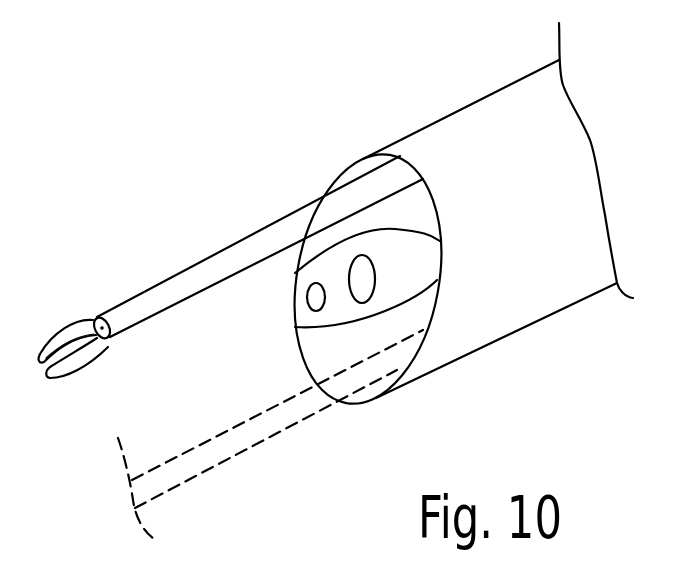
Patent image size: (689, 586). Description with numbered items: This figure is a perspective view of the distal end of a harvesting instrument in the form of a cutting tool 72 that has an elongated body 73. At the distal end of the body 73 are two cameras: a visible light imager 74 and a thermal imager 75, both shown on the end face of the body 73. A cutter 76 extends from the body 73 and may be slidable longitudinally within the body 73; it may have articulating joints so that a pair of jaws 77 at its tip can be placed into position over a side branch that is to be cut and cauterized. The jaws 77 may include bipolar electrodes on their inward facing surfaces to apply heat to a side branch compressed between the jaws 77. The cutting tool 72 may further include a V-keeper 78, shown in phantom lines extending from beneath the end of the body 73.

The cutting tool 72 is at (478, 83).
The elongated body 73 is at (547, 285).
The visible light imager 74 is at (377, 277).
The thermal imager 75 is at (308, 298).
The cutter 76 is at (195, 258).
The jaws 77 is at (48, 330).
The V-keeper 78 is at (240, 458).